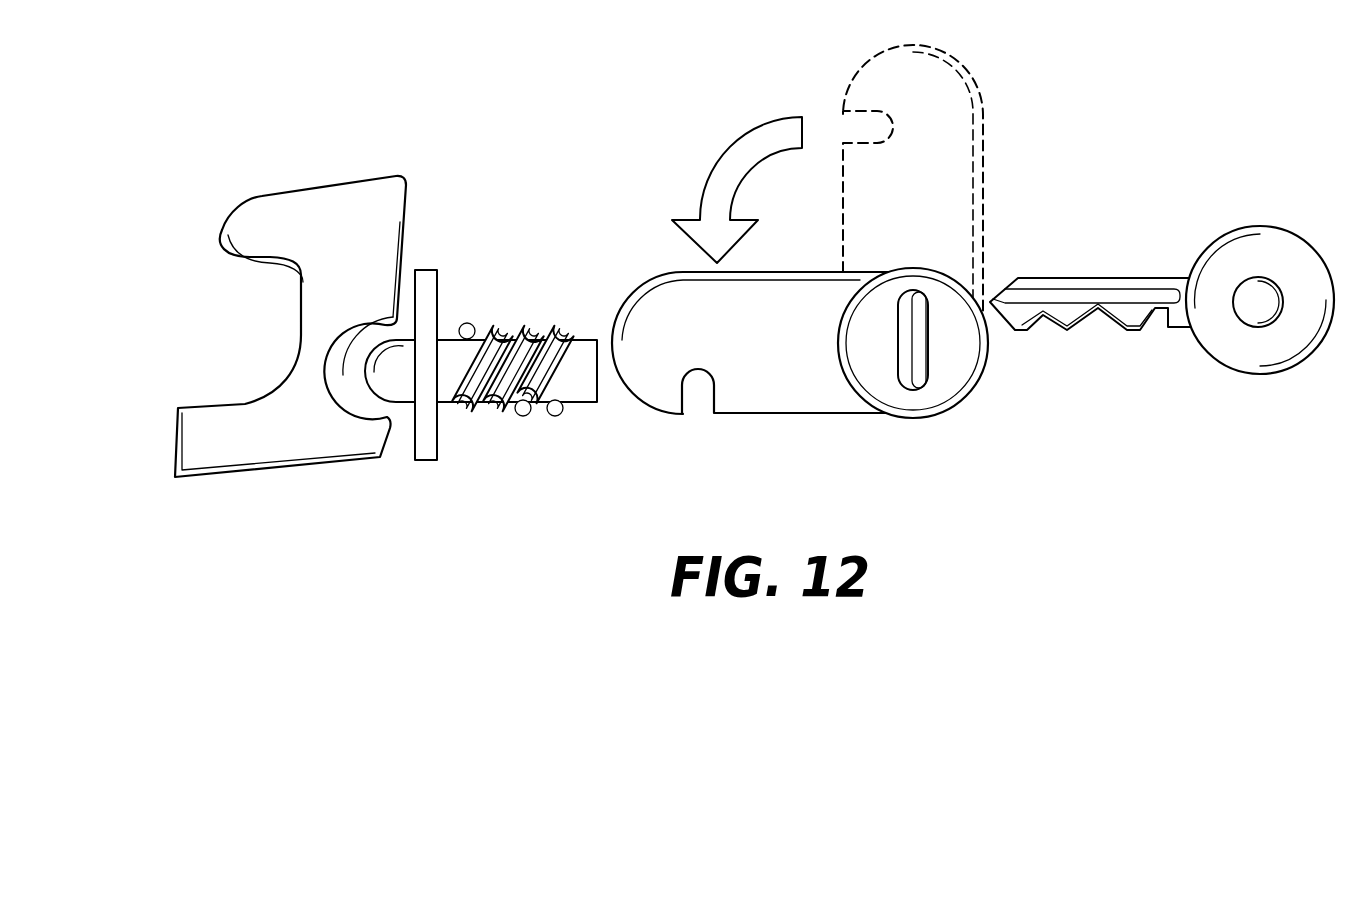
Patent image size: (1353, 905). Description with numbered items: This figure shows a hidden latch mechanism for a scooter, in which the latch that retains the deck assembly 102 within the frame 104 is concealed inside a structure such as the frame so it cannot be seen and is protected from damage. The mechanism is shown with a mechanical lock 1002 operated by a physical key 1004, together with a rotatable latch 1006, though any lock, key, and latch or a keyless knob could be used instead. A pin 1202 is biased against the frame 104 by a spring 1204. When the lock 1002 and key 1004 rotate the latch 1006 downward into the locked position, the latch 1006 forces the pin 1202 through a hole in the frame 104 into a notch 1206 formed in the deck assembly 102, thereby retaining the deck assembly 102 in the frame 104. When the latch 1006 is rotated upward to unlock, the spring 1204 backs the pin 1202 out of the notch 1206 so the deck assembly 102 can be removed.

The deck assembly 102 is at (353, 255).
The frame 104 is at (433, 270).
The mechanical lock 1002 is at (921, 393).
The physical key 1004 is at (1243, 350).
The latch 1006 is at (785, 366).
The pin 1202 is at (592, 340).
The spring 1204 is at (523, 414).
The notch 1206 is at (317, 358).